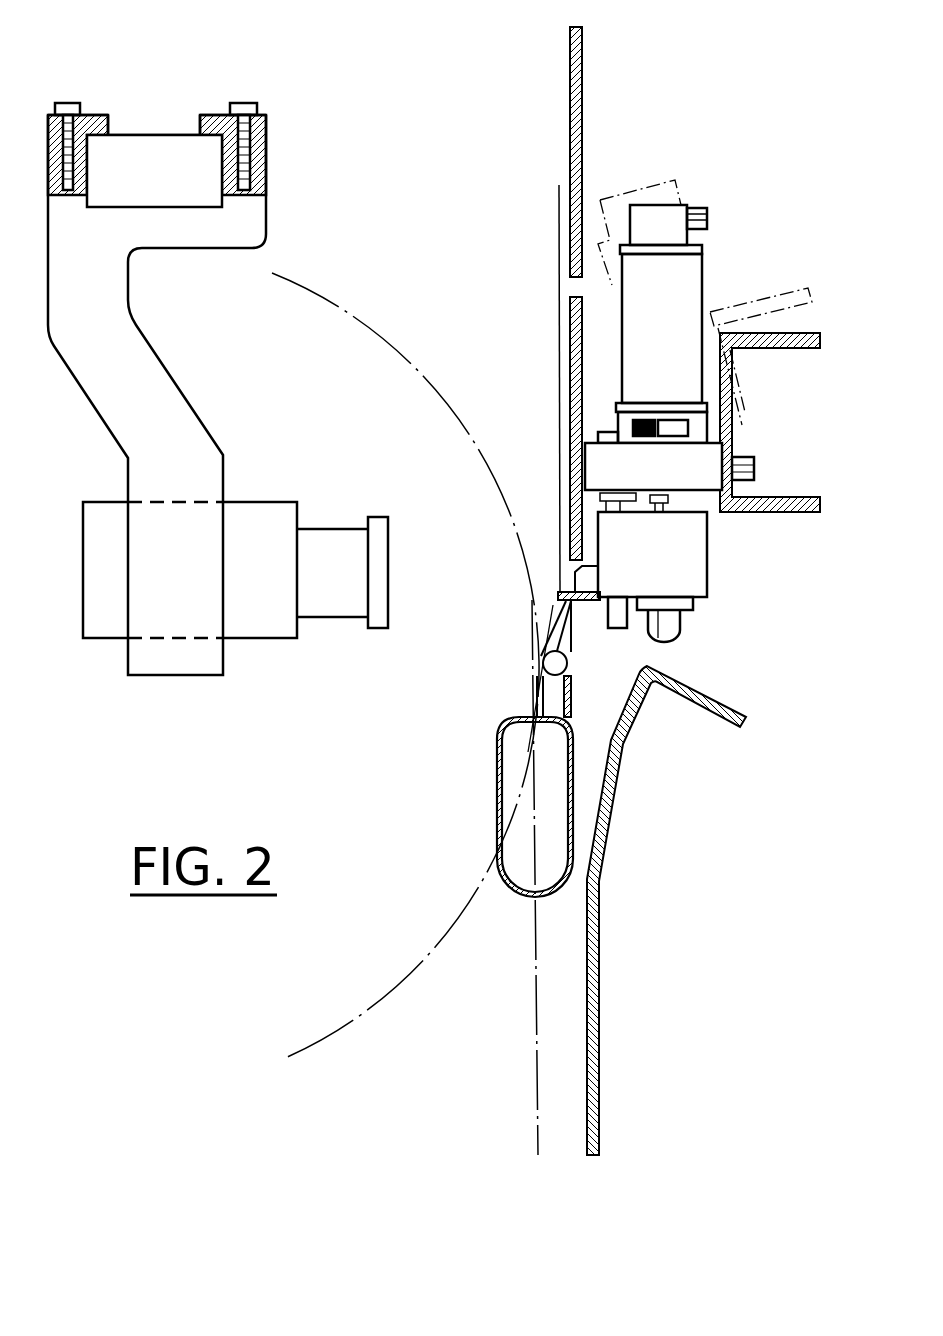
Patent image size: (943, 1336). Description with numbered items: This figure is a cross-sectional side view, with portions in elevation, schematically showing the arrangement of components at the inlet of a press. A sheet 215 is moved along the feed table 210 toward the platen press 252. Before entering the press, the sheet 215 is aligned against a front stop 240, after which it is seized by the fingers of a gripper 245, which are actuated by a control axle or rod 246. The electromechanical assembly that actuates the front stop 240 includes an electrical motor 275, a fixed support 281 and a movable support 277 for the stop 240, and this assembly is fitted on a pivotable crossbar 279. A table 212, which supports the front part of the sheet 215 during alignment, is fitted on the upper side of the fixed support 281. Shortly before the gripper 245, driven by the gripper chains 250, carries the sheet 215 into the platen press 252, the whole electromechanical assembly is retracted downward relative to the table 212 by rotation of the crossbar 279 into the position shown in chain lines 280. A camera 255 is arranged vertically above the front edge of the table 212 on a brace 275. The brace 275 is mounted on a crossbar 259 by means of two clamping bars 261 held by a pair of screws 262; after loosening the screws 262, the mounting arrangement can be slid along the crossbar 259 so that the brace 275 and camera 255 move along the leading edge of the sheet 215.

The feed table 210 is at (572, 50).
The table 212 is at (573, 325).
The sheet 215 is at (558, 185).
The front stop 240 is at (558, 596).
The gripper 245 is at (497, 770).
The control axle or rod 246 is at (543, 663).
The gripper chains 250 is at (537, 1053).
The platen press 252 is at (620, 790).
The camera 255 is at (262, 620).
The crossbar 259 is at (150, 153).
The clamping bars 261 is at (102, 117).
The screws 262 is at (80, 103).
The electrical motor / brace 275 is at (193, 435).
The movable support 277 is at (695, 583).
The pivotable crossbar 279 is at (767, 503).
The chain lines 280 is at (800, 288).
The fixed support 281 is at (703, 458).